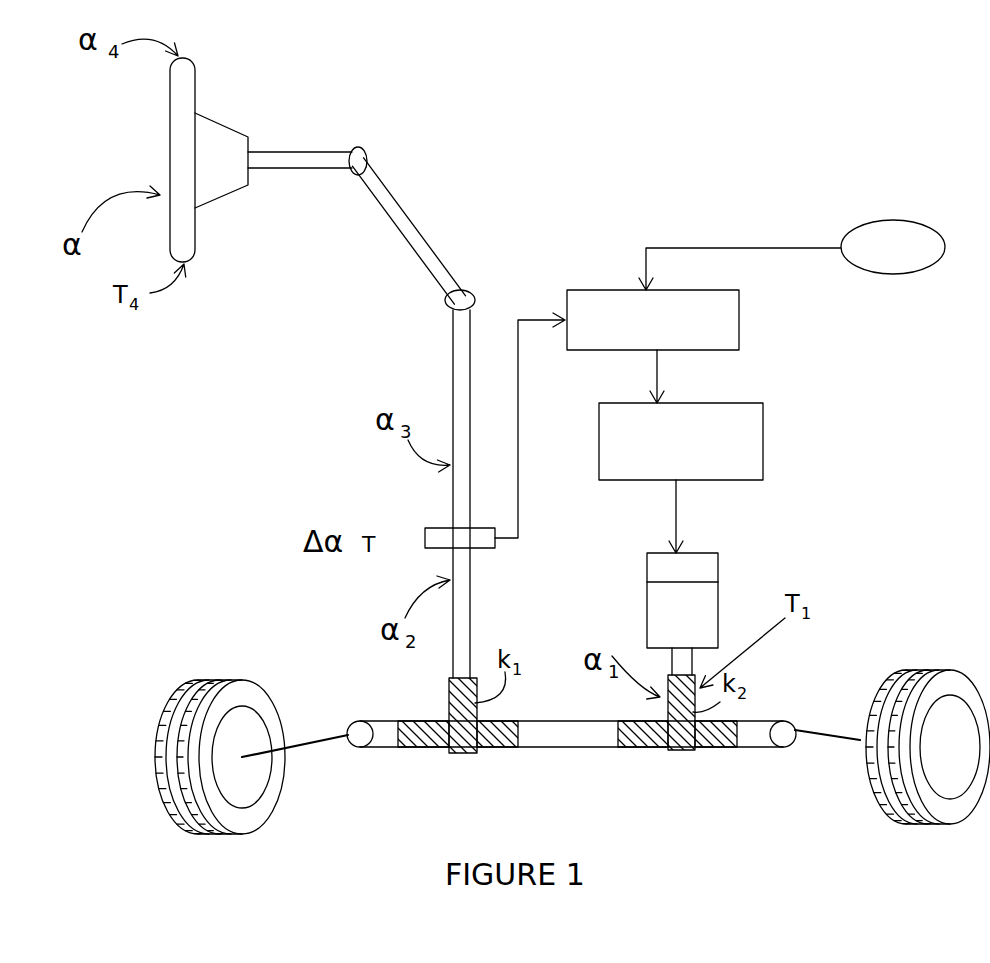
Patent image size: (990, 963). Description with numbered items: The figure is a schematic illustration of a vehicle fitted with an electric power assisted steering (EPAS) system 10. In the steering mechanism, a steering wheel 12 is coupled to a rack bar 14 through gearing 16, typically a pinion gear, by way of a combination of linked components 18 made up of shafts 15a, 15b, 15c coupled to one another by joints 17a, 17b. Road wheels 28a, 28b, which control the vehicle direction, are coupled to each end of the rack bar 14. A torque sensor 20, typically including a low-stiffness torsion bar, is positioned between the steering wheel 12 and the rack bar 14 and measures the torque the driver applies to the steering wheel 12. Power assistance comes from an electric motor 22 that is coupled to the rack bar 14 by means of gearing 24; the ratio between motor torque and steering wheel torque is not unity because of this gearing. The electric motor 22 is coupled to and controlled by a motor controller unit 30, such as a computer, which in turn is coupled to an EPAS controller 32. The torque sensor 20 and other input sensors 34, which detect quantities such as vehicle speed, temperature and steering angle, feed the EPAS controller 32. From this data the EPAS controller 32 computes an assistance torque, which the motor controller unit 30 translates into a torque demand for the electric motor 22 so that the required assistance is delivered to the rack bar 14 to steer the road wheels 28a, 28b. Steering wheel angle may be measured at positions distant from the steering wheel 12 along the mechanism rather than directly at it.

The EPAS system 10 is at (120, 447).
The steering wheel 12 is at (172, 104).
The rack bar 14 is at (586, 752).
The shaft 15a is at (295, 150).
The shaft 15b is at (408, 213).
The shaft 15c is at (462, 373).
The gearing 16 is at (462, 758).
The joint 17a is at (365, 148).
The joint 17b is at (465, 292).
The linked components 18 is at (432, 345).
The torque sensor 20 is at (440, 528).
The electric motor 22 is at (682, 577).
The gearing 24 is at (680, 752).
The road wheel 28a is at (278, 785).
The road wheel 28b is at (862, 770).
The motor controller unit 30 is at (681, 441).
The EPAS controller 32 is at (653, 346).
The input sensors 34 is at (792, 255).